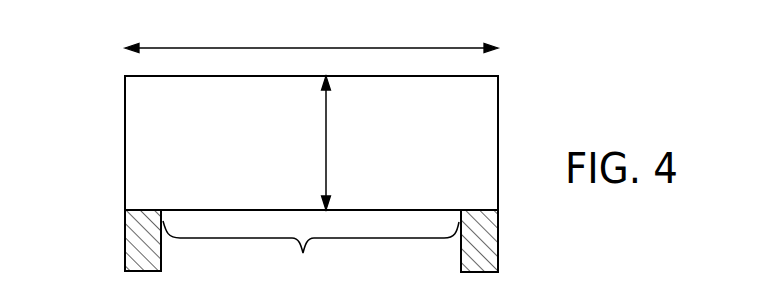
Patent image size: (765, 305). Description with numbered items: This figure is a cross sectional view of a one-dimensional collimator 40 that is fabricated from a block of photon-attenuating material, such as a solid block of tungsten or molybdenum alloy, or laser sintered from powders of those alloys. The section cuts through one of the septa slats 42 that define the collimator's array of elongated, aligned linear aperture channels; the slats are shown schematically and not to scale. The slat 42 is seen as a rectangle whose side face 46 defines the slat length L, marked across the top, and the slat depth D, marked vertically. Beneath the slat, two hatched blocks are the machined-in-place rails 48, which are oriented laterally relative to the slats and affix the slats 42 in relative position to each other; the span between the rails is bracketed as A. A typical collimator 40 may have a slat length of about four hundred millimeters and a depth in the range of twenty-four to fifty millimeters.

The one-dimensional collimator 40 is at (90, 141).
The septa slat 42 is at (498, 106).
The side face 46 is at (258, 157).
The rail 48 is at (128, 245).